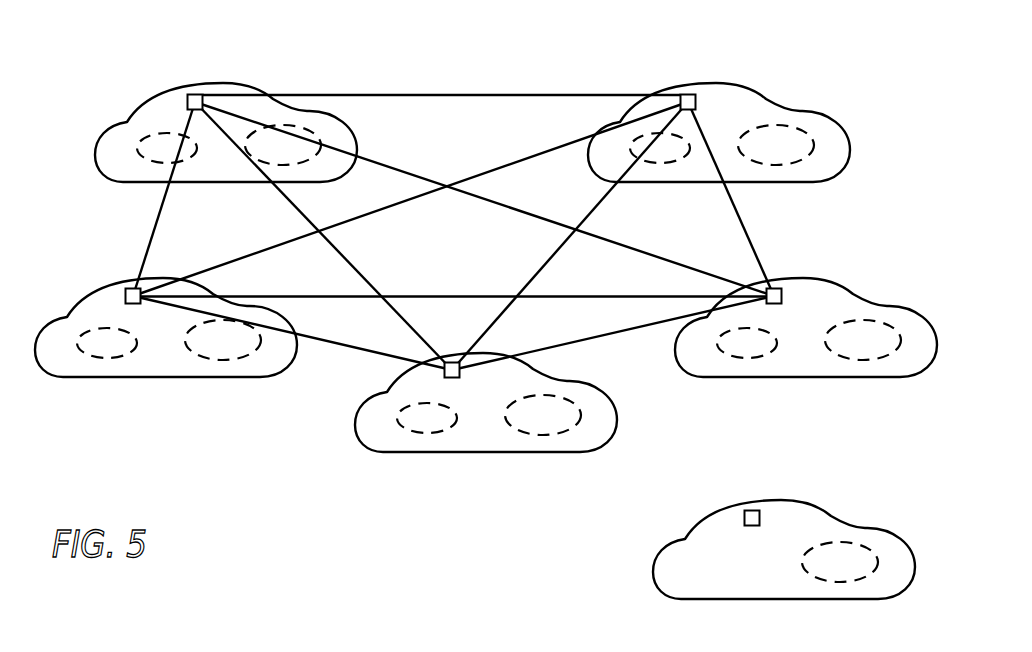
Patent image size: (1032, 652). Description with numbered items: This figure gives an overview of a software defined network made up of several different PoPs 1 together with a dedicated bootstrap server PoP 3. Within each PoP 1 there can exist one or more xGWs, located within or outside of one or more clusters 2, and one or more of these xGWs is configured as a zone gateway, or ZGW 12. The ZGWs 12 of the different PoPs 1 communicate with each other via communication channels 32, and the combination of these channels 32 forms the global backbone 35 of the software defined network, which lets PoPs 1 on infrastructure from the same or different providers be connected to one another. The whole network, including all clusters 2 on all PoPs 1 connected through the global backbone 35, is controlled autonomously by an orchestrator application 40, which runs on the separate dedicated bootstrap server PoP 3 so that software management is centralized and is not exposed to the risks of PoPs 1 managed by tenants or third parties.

The PoP 1 is at (127, 120).
The cluster 2 is at (290, 126).
The dedicated bootstrap server PoP 3 is at (898, 535).
The zone gateway (ZGW) 12 is at (195, 94).
The communication channel 32 is at (435, 95).
The global backbone 35 is at (740, 217).
The orchestrator application 40 is at (843, 542).